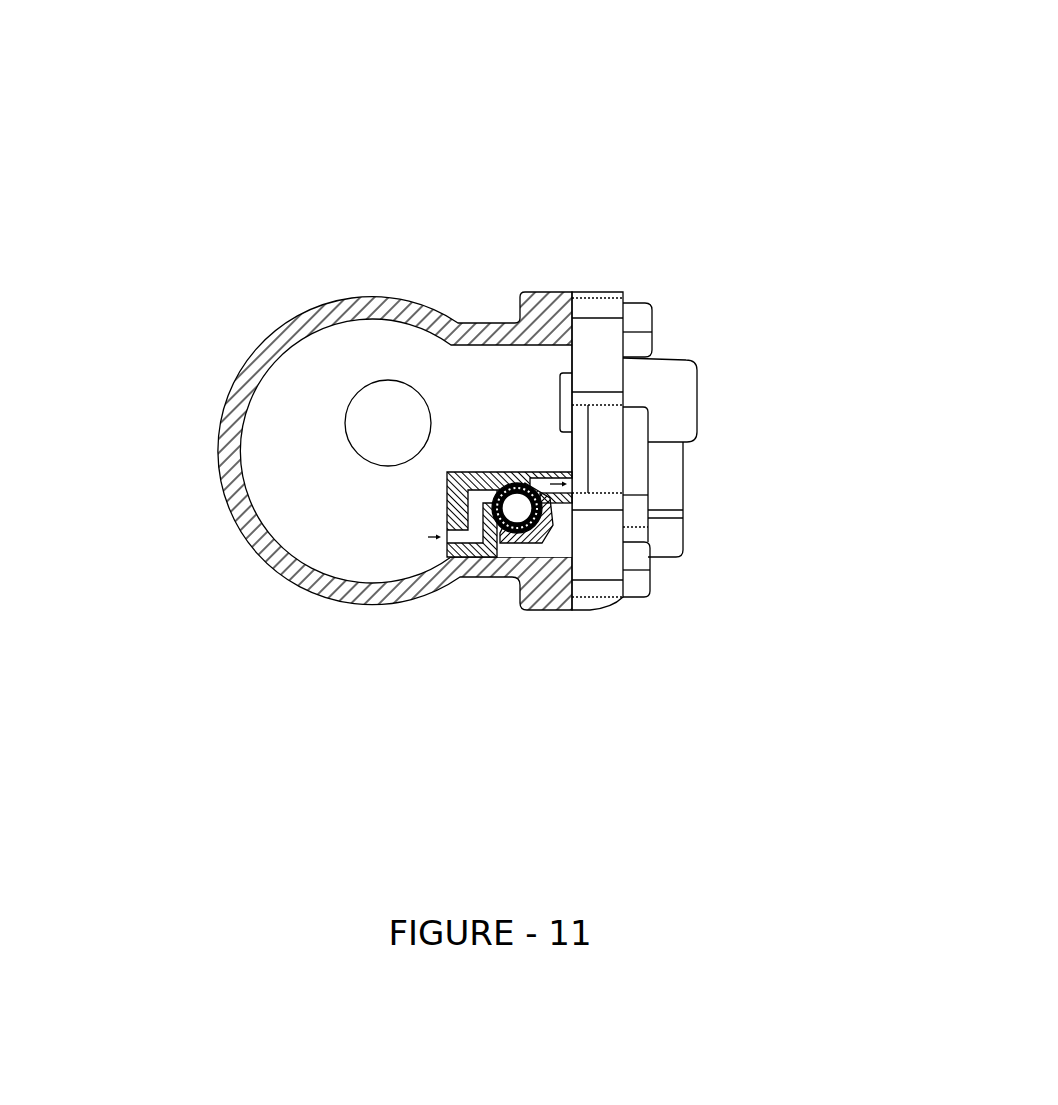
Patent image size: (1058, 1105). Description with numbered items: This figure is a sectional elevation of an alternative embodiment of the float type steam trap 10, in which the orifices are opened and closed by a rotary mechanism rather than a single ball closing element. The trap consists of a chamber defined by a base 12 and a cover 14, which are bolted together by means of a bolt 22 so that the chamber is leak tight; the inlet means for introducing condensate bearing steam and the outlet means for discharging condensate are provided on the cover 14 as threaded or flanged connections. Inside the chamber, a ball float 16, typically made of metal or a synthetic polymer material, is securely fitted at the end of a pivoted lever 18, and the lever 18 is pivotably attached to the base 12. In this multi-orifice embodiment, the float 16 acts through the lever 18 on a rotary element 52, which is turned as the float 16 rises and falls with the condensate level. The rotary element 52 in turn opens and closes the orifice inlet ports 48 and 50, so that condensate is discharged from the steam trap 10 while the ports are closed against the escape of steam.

The steam trap 10 is at (544, 154).
The base 12 is at (607, 292).
The cover 14 is at (265, 437).
The ball float 16 is at (350, 433).
The lever 18 is at (324, 518).
The bolt 22 is at (652, 318).
The orifice inlet port 48 is at (443, 542).
The orifice inlet port 50 is at (515, 540).
The rotary element 52 is at (610, 575).